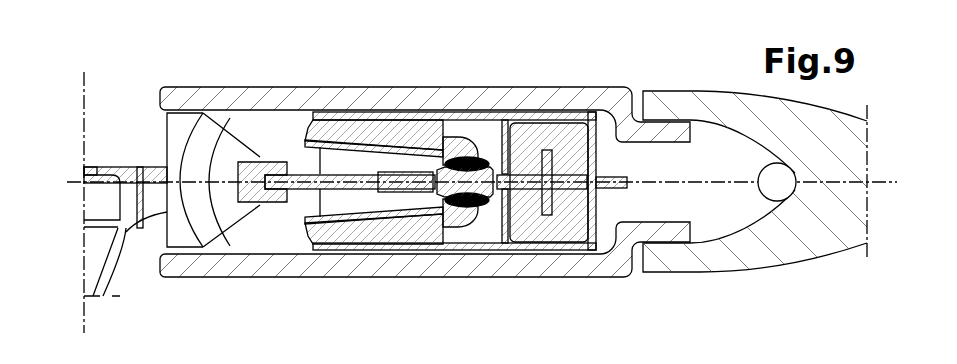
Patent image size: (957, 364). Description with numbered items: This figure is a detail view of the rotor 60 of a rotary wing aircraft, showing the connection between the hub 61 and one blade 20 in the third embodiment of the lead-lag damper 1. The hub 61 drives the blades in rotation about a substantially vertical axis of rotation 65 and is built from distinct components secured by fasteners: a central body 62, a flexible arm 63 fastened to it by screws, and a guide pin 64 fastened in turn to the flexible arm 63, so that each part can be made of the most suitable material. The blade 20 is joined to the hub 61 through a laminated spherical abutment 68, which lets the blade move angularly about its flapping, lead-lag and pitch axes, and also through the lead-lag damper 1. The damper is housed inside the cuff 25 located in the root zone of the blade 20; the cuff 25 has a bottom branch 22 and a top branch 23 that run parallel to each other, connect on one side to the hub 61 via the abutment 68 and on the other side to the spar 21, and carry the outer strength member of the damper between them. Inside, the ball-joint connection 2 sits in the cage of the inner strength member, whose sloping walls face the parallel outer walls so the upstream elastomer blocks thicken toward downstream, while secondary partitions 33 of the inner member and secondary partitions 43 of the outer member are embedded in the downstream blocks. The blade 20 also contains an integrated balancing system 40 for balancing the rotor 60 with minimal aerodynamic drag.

The lead-lag damper 1 is at (333, 112).
The ball-joint connection 2 is at (413, 232).
The blade 20 is at (678, 57).
The spar 21 is at (800, 247).
The bottom branch 22 is at (176, 265).
The top branch 23 is at (237, 97).
The cuff 25 is at (305, 334).
The secondary partitions 33 is at (542, 152).
The balancing system 40 is at (758, 178).
The secondary partitions 43 is at (508, 132).
The rotor 60 is at (136, 303).
The hub 61 is at (60, 202).
The central body 62 is at (127, 167).
The flexible arm 63 is at (308, 189).
The guide pin 64 is at (432, 150).
The axis of rotation 65 is at (82, 87).
The laminated spherical abutment 68 is at (188, 117).